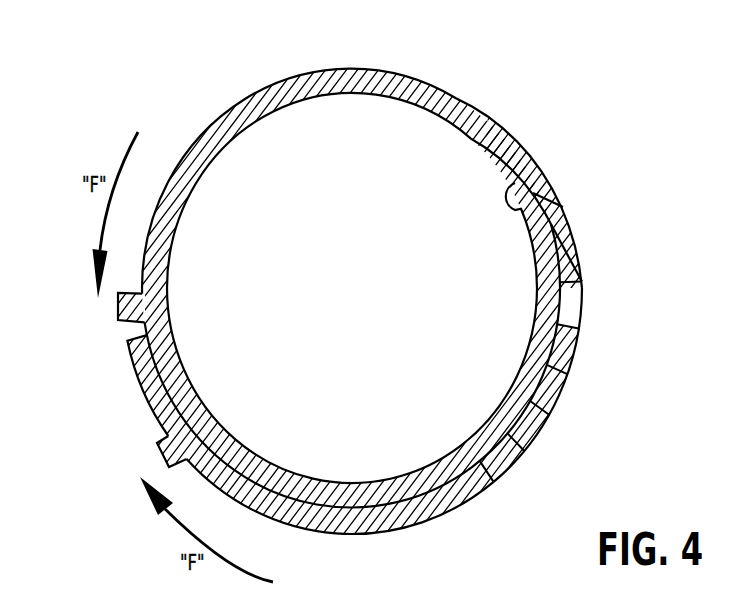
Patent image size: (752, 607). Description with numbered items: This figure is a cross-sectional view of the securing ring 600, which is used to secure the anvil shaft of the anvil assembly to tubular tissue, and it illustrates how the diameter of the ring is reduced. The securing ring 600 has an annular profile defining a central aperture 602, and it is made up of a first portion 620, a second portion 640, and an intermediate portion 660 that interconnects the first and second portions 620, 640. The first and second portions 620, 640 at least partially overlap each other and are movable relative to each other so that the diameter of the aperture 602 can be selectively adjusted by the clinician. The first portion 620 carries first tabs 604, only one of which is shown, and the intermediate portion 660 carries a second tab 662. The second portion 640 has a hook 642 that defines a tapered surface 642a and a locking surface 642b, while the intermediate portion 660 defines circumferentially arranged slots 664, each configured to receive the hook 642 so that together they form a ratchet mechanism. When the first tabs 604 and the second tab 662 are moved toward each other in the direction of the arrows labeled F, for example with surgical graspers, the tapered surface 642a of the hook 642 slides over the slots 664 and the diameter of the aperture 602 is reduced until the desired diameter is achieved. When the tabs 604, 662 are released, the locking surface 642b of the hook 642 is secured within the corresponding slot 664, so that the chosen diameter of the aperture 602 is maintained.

The securing ring 600 is at (641, 102).
The aperture 602 is at (345, 143).
The first tabs 604 is at (165, 462).
The first portion 620 is at (162, 434).
The second portion 640 is at (517, 413).
The hook 642 is at (558, 224).
The tapered surface 642a is at (534, 162).
The locking surface 642b is at (582, 283).
The intermediate portion 660 is at (425, 94).
The second tab 662 is at (124, 308).
The slots 664 is at (551, 194).